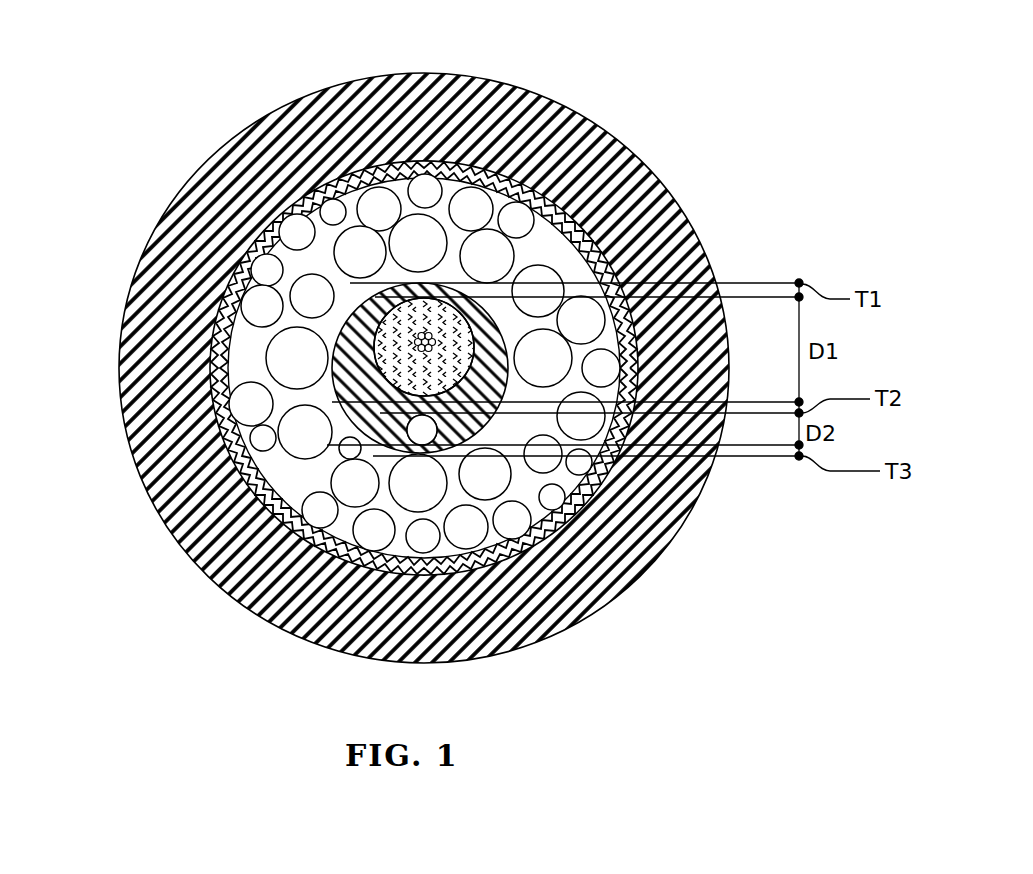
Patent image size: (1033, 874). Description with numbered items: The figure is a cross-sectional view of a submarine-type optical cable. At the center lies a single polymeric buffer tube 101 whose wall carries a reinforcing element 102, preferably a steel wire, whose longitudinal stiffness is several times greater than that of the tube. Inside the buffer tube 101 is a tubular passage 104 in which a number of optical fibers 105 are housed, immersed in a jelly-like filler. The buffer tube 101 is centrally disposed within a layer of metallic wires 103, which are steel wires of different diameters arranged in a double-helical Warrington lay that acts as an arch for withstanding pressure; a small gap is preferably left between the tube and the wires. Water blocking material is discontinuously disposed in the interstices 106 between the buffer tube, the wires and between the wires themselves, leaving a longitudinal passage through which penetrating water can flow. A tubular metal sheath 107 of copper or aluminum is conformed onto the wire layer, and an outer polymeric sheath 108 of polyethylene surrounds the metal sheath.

The polymeric buffer tube 101 is at (305, 450).
The reinforcing element 102 is at (417, 430).
The layer of metallic wires 103 is at (297, 358).
The tubular passage 104 is at (365, 328).
The optical fibers 105 is at (278, 214).
The interstices 106 is at (420, 340).
The tubular metal sheath 107 is at (397, 160).
The outer polymeric sheath 108 is at (412, 100).